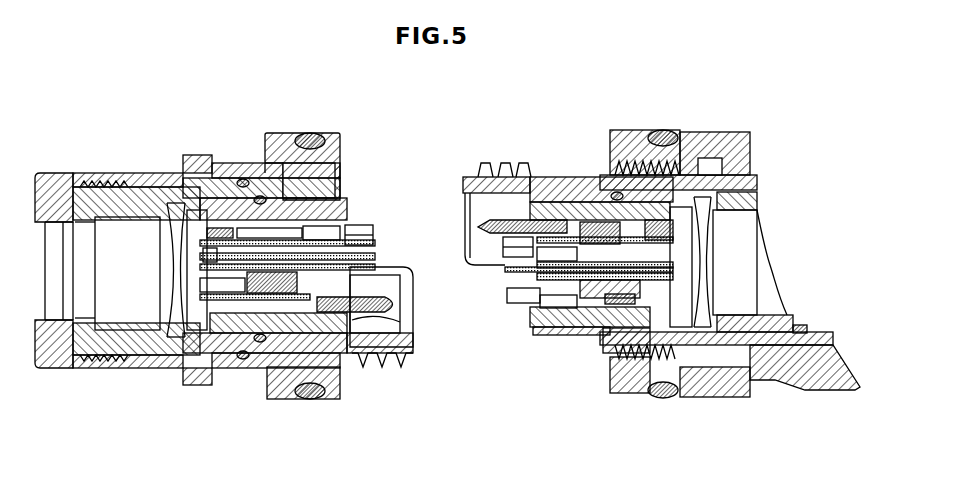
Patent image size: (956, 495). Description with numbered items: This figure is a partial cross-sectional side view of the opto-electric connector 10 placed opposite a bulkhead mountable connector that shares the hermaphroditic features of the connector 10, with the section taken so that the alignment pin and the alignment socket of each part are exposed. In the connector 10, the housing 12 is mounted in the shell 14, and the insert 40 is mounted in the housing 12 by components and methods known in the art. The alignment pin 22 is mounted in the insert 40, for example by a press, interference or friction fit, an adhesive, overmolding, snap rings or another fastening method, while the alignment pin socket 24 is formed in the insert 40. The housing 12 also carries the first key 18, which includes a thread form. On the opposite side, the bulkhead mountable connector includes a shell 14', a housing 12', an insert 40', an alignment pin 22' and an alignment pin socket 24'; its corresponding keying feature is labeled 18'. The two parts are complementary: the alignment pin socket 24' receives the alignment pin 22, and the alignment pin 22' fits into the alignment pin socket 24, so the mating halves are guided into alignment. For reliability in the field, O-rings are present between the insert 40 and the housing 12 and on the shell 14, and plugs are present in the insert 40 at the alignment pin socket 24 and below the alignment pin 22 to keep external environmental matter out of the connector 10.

The opto-electric connector 10 is at (752, 148).
The housing 12 is at (589, 216).
The housing 12' is at (231, 227).
The shell 14 is at (716, 231).
The shell 14' is at (187, 231).
The first key 18 is at (497, 181).
The mating retaining nut 18' is at (382, 413).
The alignment pin 22 is at (479, 266).
The alignment pin 22' is at (402, 307).
The alignment pin socket 24 is at (538, 345).
The alignment pin socket 24' is at (384, 198).
The insert 40 is at (488, 218).
The insert 40' is at (408, 310).